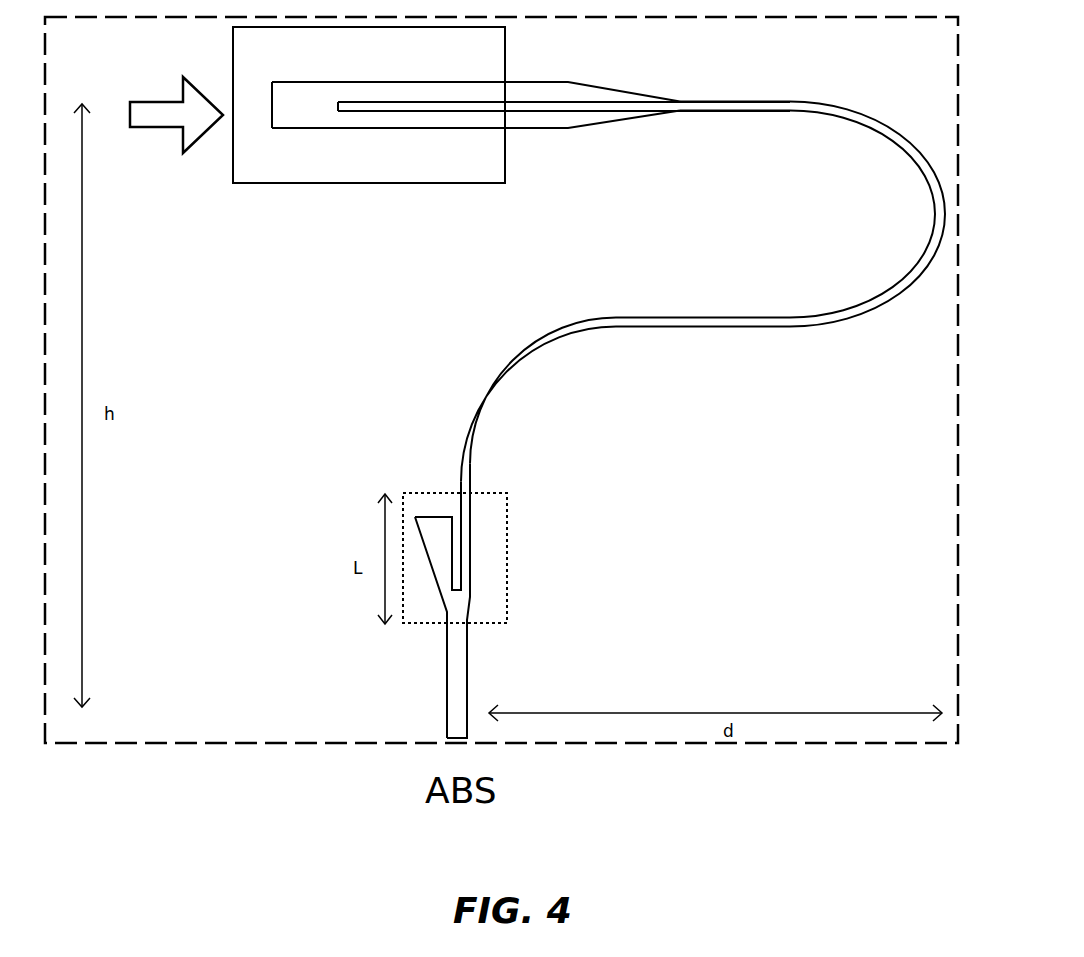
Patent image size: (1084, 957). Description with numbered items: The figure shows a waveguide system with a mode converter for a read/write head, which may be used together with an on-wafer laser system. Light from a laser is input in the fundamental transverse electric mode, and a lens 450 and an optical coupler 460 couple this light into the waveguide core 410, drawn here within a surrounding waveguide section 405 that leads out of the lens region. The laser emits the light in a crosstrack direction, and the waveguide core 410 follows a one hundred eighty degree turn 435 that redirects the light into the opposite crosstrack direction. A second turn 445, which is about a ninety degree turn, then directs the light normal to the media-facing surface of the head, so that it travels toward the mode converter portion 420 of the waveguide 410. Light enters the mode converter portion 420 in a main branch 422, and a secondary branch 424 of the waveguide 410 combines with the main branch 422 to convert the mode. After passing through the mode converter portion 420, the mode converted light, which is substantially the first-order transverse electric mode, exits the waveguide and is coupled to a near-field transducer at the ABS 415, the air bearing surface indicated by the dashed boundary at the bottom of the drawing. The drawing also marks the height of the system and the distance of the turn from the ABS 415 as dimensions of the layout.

The waveguide cladding 405 is at (278, 100).
The waveguide core 410 is at (738, 104).
The ABS 415 is at (340, 745).
The mode converter portion 420 is at (425, 491).
The main branch 422 is at (472, 555).
The secondary branch 424 is at (443, 556).
The 180 degree turn 435 is at (947, 200).
The second turn 445 is at (518, 365).
The lens 450 is at (358, 175).
The optical coupler 460 is at (452, 127).